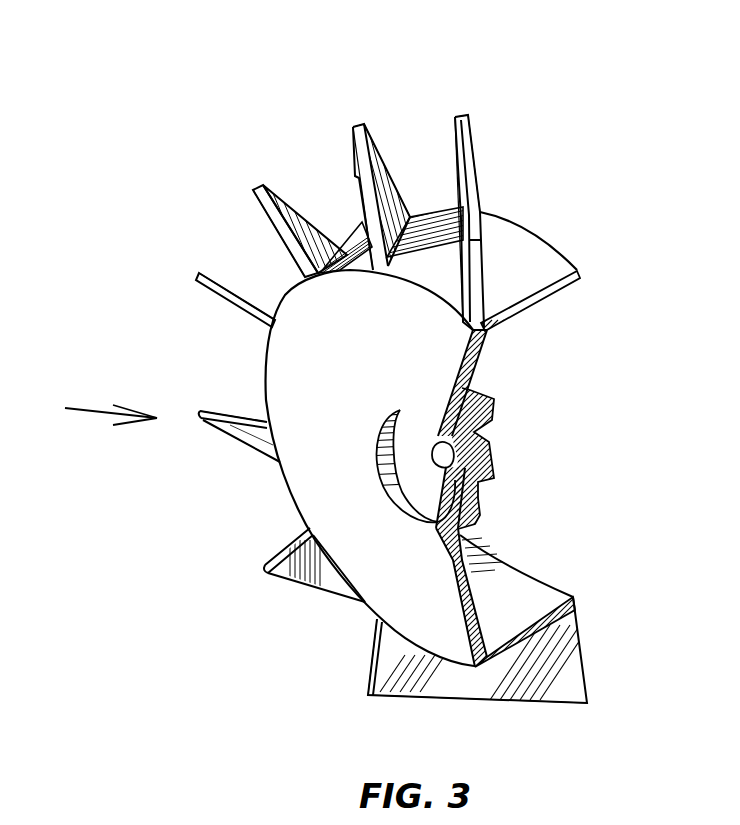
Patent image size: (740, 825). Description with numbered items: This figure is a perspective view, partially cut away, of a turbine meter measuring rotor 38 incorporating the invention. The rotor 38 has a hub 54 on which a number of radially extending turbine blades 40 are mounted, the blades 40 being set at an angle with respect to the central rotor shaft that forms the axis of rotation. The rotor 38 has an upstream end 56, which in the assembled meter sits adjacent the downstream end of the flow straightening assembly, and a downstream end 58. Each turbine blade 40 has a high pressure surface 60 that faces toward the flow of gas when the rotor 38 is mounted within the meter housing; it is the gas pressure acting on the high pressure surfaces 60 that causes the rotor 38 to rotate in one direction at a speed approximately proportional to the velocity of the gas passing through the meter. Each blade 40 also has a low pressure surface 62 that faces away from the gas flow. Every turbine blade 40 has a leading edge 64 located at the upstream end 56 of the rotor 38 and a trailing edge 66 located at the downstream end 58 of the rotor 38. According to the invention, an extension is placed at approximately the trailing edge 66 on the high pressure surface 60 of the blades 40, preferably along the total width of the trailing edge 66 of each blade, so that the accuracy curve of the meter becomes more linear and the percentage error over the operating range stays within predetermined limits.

The measuring rotor 38 is at (52, 412).
The turbine blade 40 is at (378, 152).
The hub 54 is at (433, 357).
The upstream end 56 is at (470, 665).
The downstream end 58 is at (549, 243).
The high pressure surface 60 is at (253, 440).
The low pressure surface 62 is at (482, 168).
The leading edge 64 is at (353, 180).
The trailing edge 66 is at (355, 125).